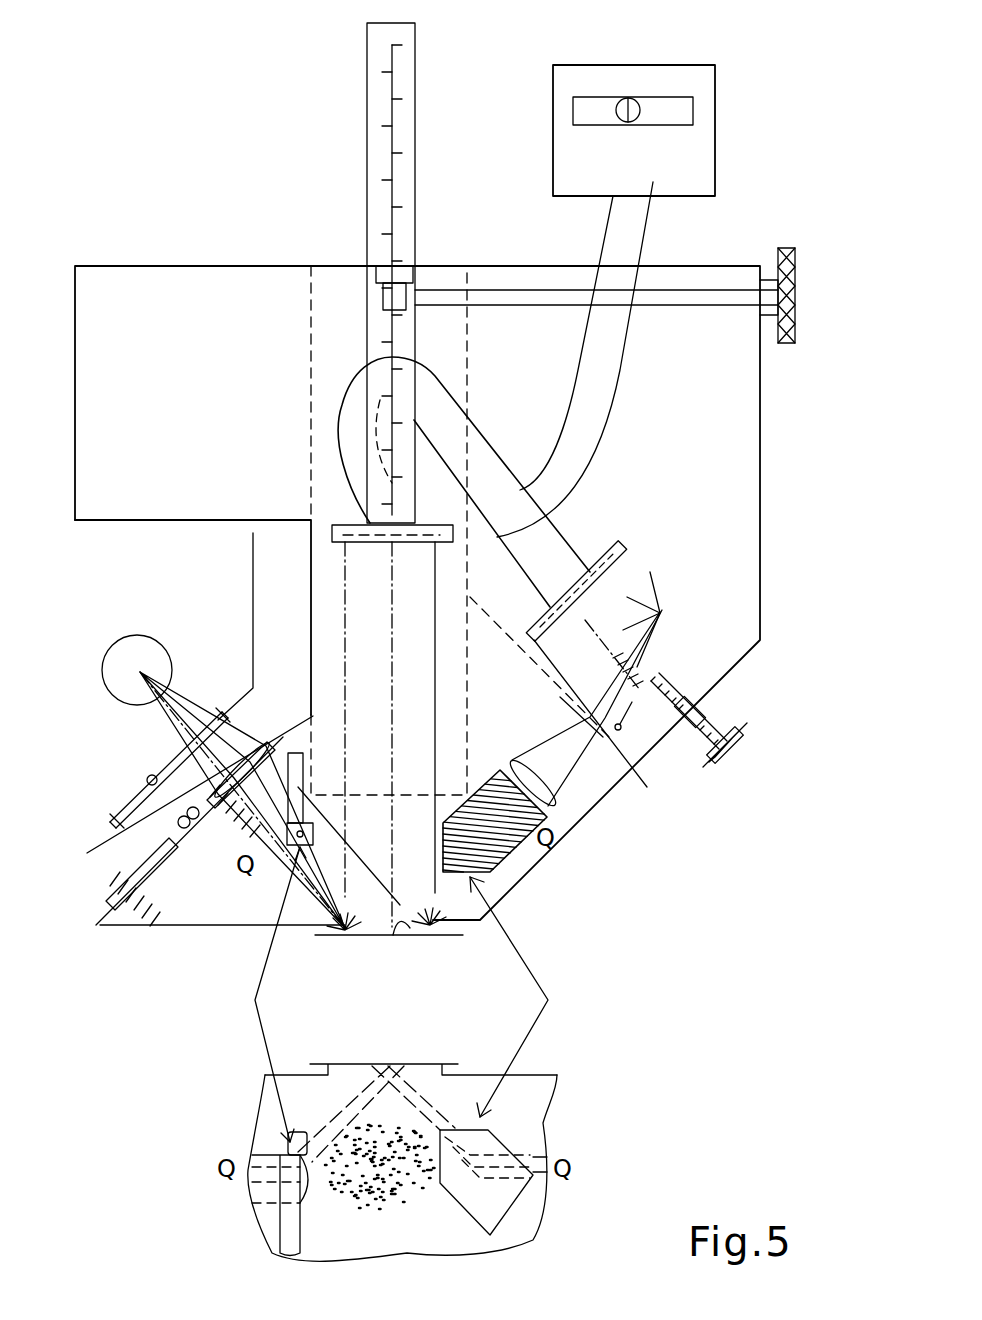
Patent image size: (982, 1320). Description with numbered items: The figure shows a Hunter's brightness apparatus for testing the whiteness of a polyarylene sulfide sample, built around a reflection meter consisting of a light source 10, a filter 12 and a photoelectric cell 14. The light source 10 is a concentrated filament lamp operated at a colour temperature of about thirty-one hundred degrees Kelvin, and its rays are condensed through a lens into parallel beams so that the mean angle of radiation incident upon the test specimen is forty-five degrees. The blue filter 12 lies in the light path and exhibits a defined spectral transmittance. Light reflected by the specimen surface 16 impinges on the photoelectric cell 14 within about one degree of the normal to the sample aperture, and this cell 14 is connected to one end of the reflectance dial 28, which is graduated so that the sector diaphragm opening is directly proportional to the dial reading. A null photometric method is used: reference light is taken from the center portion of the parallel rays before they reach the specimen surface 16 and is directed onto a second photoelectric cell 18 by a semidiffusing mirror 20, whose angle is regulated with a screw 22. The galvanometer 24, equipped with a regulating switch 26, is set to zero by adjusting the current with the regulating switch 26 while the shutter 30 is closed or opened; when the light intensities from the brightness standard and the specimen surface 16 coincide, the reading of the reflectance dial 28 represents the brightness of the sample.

The light source 10 is at (122, 637).
The filter 12 is at (210, 798).
The photoelectric cell 14 is at (332, 524).
The specimen surface 16 is at (420, 930).
The photoelectric cell 18 is at (620, 545).
The semidiffusing mirror 20 is at (657, 655).
The screw 22 is at (705, 768).
The galvanometer 24 is at (715, 115).
The regulating switch 26 is at (780, 252).
The reflectance dial 28 is at (367, 117).
The shutter 30 is at (162, 770).